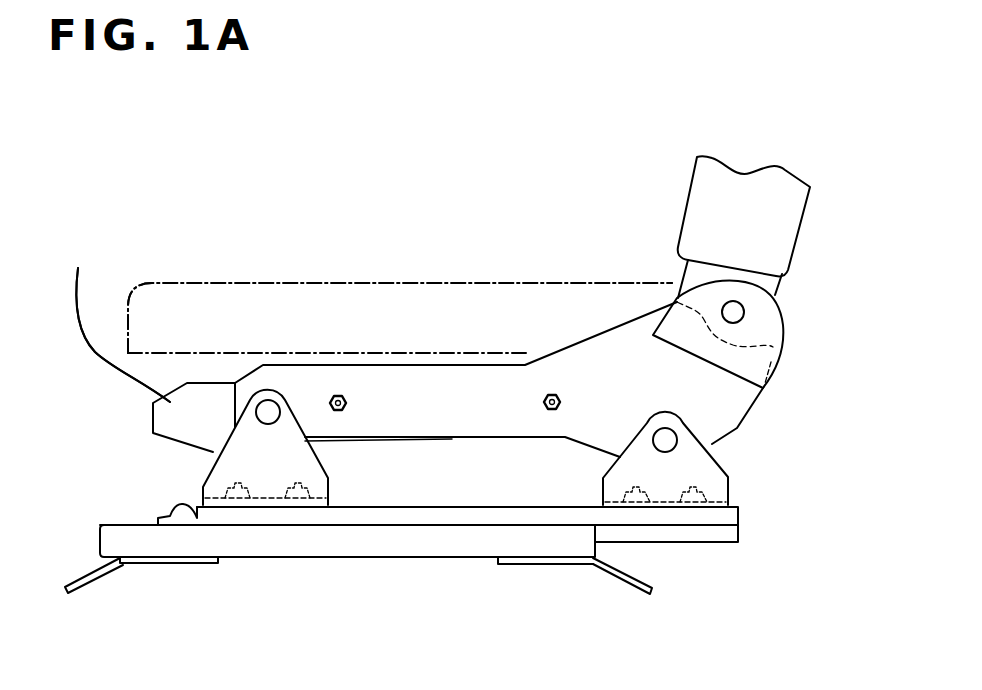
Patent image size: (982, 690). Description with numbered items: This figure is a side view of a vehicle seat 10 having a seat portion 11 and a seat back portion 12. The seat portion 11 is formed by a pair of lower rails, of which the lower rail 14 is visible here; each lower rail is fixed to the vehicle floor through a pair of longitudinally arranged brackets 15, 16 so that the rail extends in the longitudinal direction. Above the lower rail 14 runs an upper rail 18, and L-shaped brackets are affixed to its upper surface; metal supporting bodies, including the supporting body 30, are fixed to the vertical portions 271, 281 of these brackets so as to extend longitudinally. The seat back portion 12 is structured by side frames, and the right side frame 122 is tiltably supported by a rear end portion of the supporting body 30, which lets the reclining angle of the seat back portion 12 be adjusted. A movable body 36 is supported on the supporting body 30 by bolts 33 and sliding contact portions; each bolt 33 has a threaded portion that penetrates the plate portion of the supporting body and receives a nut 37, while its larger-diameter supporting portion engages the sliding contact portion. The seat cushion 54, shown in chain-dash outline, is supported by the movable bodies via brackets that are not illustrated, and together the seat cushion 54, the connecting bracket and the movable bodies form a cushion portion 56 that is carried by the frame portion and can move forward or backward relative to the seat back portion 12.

The vehicle seat 10 is at (178, 201).
The seat portion 11 is at (58, 280).
The seat back portion 12 is at (787, 251).
The right side frame 122 is at (780, 297).
The lower rail 14 is at (358, 547).
The bracket 15 is at (103, 577).
The bracket 16 is at (632, 583).
The upper rail 18 is at (738, 533).
The vertical portion 271 is at (215, 470).
The vertical portion 281 is at (713, 455).
The supporting body 30 is at (487, 428).
The bolt 33 is at (346, 401).
The movable body 36 is at (151, 344).
The nut 37 is at (347, 408).
The seat cushion 54 is at (207, 282).
The cushion portion 56 is at (136, 231).